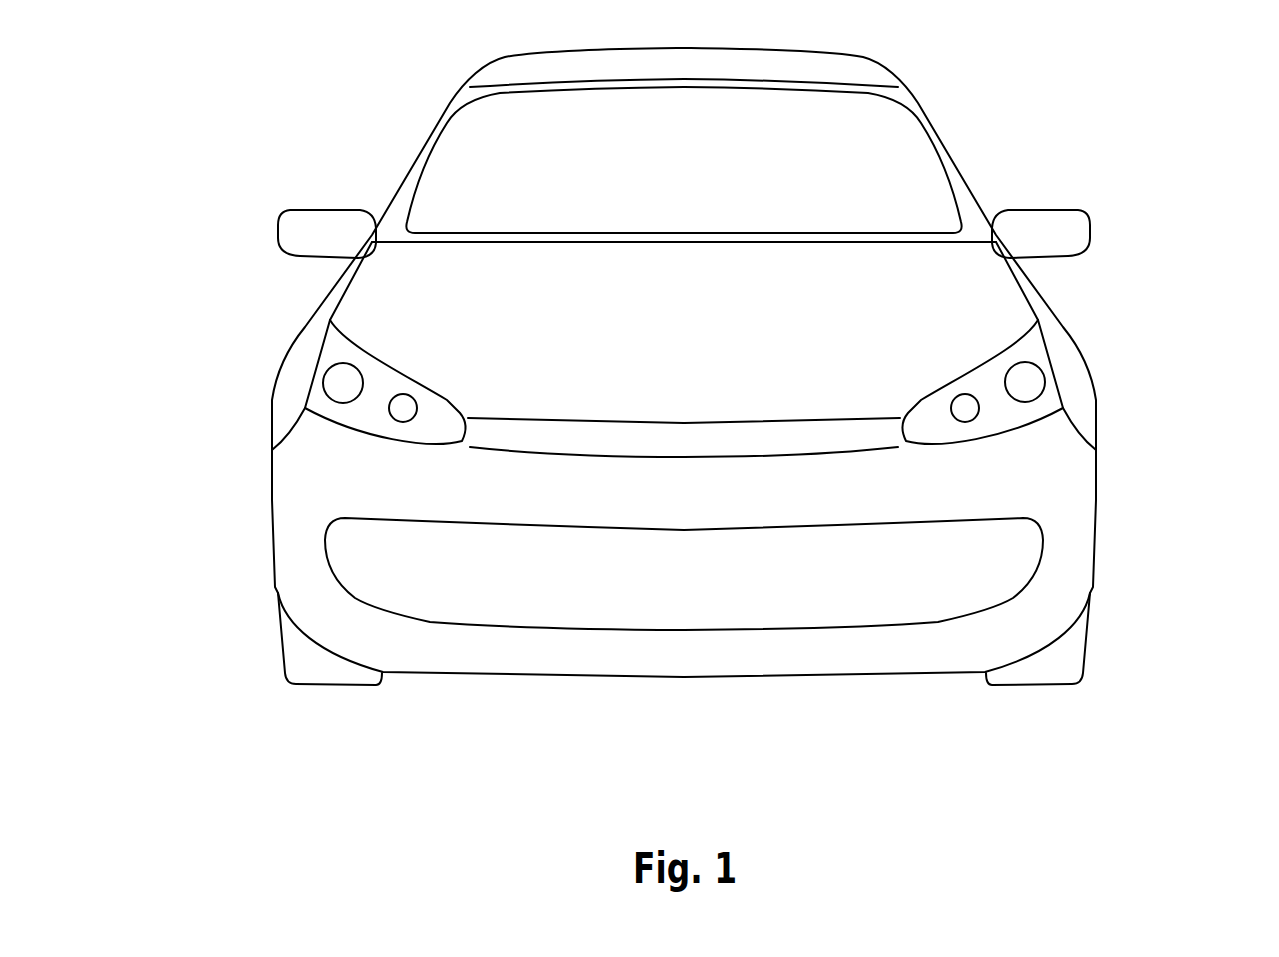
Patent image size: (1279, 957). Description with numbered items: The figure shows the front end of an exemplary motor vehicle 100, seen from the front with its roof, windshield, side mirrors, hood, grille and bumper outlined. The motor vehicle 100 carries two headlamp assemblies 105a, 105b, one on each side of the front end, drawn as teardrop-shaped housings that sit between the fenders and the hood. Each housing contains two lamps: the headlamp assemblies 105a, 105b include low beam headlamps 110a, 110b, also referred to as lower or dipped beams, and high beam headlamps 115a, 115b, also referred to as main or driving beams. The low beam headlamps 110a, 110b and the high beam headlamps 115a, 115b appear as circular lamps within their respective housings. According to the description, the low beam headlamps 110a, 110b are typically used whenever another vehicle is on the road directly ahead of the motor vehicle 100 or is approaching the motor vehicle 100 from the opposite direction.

The motor vehicle 100 is at (947, 110).
The headlamp assembly 105a is at (313, 333).
The headlamp assembly 105b is at (1037, 347).
The low beam headlamp 110a is at (327, 372).
The low beam headlamp 110b is at (1030, 373).
The high beam headlamp 115a is at (383, 407).
The high beam headlamp 115b is at (967, 407).